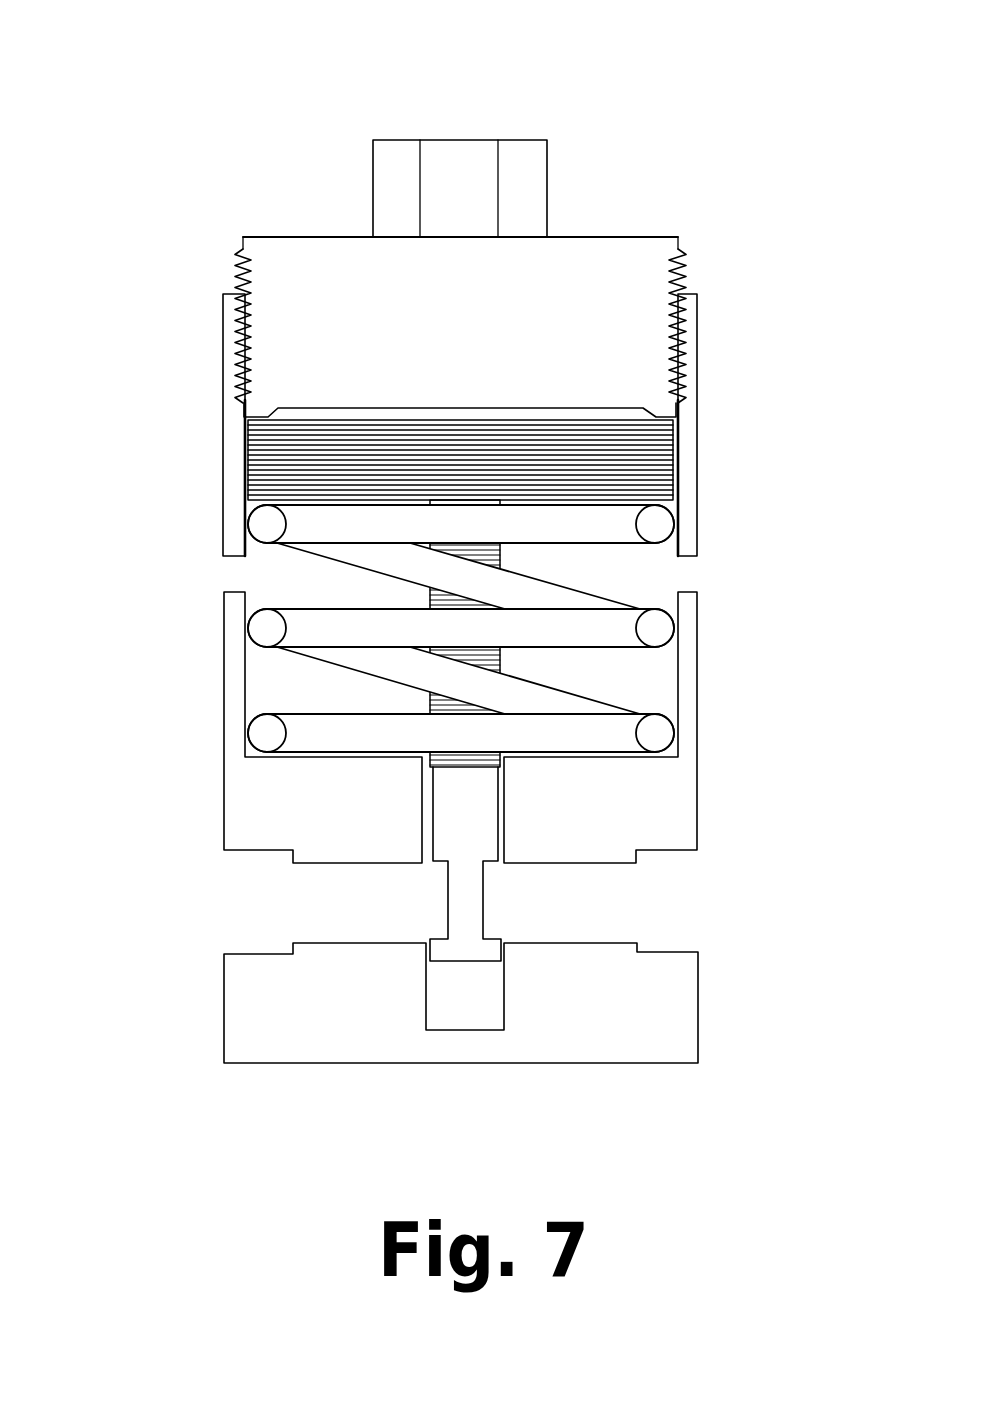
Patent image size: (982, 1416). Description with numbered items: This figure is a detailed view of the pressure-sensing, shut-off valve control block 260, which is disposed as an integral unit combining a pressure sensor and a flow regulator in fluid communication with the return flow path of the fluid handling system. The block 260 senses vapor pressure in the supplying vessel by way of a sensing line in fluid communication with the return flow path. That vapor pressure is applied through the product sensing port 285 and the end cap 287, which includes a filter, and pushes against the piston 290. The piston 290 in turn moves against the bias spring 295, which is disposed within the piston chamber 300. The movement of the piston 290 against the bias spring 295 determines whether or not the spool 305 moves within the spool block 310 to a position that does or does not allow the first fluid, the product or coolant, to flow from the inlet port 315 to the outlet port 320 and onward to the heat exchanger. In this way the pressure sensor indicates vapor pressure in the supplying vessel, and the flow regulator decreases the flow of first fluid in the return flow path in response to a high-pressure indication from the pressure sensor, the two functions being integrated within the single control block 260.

The pressure-sensing, shut-off valve control block 260 is at (232, 110).
The product sensing port 285 is at (448, 160).
The end cap 287 is at (594, 274).
The piston 290 is at (626, 449).
The bias spring 295 is at (594, 603).
The piston chamber 300 is at (265, 583).
The spool 305 is at (465, 946).
The spool block 310 is at (293, 1033).
The inlet port 315 is at (290, 918).
The outlet port 320 is at (659, 904).